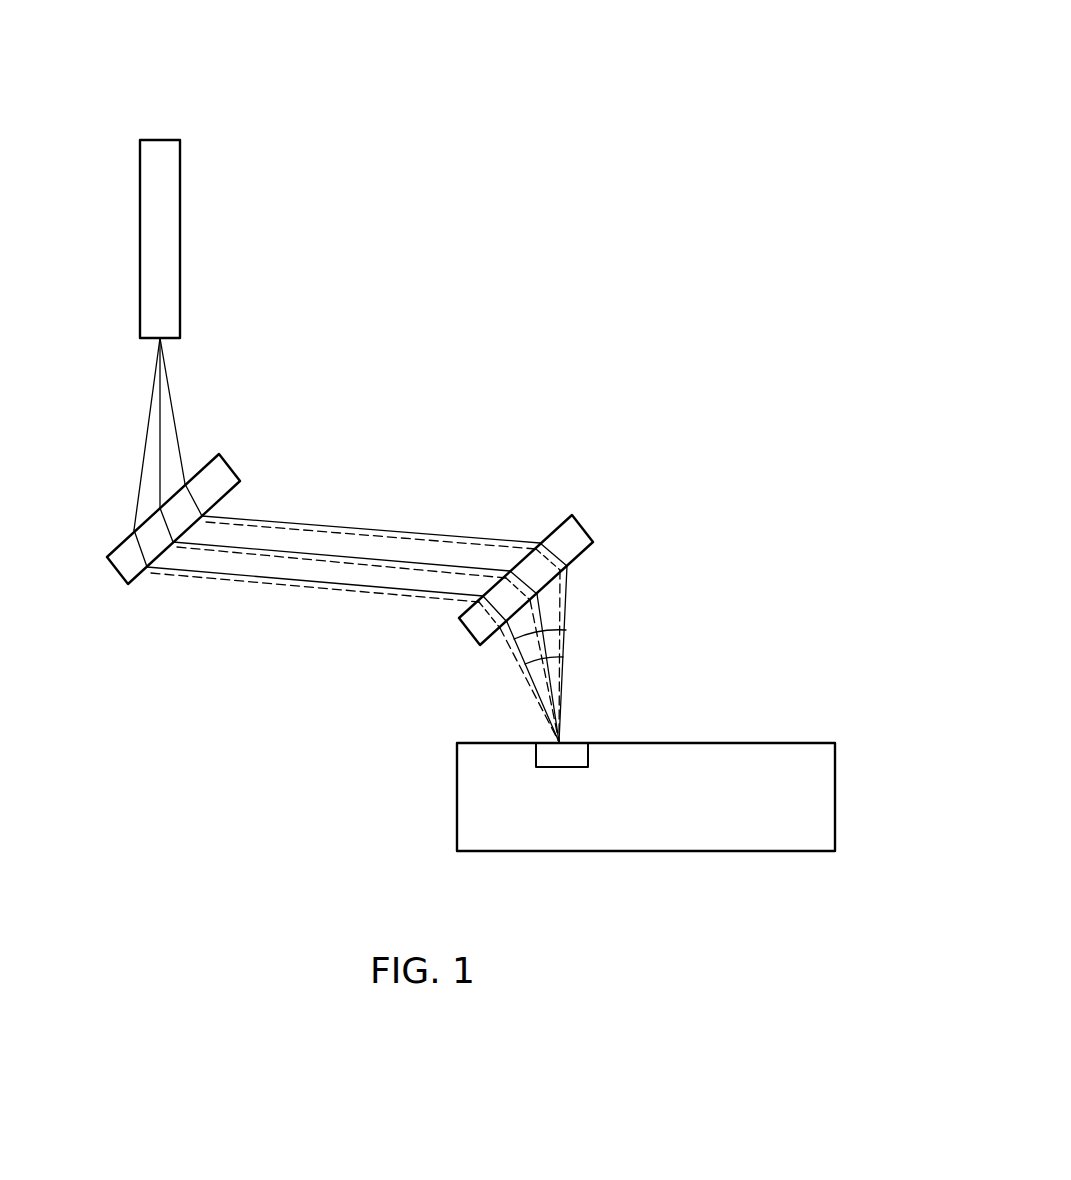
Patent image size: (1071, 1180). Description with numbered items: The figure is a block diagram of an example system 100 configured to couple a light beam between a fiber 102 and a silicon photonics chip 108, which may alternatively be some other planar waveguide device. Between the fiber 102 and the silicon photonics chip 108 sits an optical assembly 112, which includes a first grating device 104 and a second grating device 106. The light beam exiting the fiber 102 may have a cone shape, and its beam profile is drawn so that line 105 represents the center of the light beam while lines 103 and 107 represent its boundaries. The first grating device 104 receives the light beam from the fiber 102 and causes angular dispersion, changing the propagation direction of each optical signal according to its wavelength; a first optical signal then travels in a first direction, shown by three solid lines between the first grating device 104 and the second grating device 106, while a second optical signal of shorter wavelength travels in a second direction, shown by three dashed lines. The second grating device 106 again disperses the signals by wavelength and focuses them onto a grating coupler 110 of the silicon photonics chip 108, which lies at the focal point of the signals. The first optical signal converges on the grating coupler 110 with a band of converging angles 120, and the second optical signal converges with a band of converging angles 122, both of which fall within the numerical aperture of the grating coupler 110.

The system 100 is at (638, 54).
The fiber 102 is at (137, 273).
The line representing a boundary of the light beam 103 is at (145, 420).
The first grating device 104 is at (113, 567).
The line representing a center of the light beam 105 is at (158, 482).
The second grating device 106 is at (577, 523).
The line representing a boundary of the light beam 107 is at (178, 437).
The silicon photonics chip 108 is at (457, 802).
The grating coupler 110 is at (560, 768).
The optical assembly 112 is at (488, 657).
The band of converging angles 120 is at (552, 653).
The band of converging angles 122 is at (548, 627).